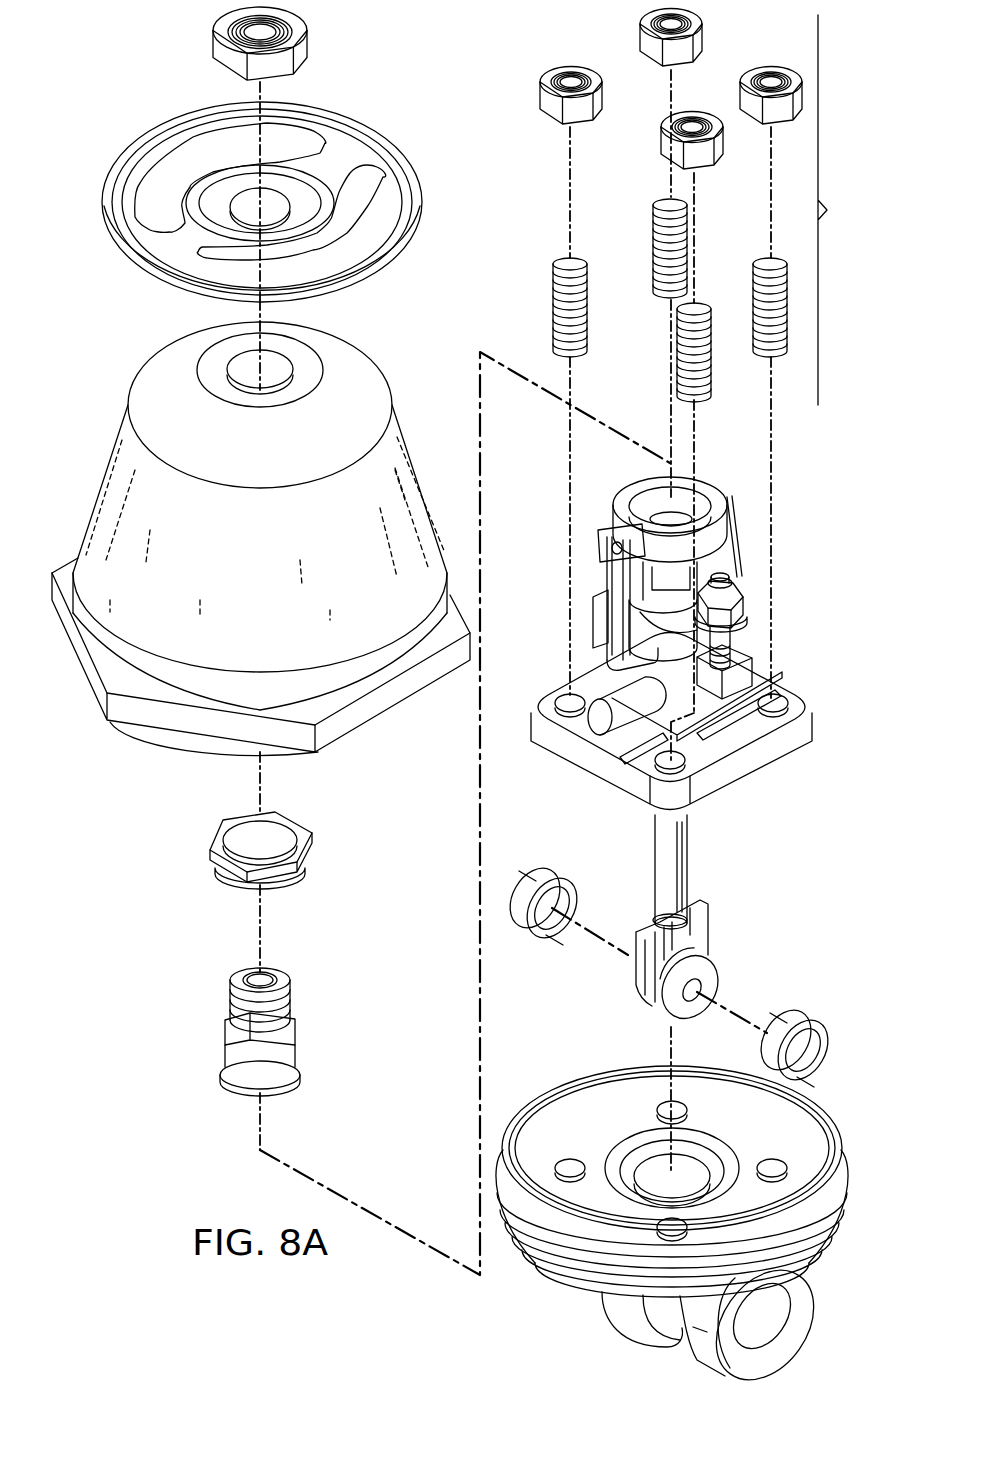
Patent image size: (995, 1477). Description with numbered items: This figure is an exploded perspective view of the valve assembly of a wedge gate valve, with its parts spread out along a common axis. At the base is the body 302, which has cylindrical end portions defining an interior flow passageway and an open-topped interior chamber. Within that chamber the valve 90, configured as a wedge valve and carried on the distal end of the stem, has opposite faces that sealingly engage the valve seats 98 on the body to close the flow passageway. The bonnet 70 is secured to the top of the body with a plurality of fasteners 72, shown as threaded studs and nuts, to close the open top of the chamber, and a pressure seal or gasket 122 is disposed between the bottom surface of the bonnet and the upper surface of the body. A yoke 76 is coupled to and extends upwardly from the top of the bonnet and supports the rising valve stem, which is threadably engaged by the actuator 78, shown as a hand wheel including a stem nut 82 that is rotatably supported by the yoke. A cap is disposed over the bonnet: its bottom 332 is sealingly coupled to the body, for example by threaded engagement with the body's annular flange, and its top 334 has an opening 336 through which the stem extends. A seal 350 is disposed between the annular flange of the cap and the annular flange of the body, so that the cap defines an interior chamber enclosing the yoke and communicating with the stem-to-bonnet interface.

The bonnet 70 is at (753, 775).
The fasteners 72 is at (700, 207).
The yoke 76 is at (710, 482).
The actuator 78 is at (163, 125).
The stem nut 82 is at (226, 1045).
The valve 90 is at (628, 980).
The valve seats 98 is at (540, 870).
The pressure seal or gasket 122 is at (622, 1156).
The body 302 is at (686, 1222).
The bottom 332 is at (127, 727).
The top 334 is at (260, 510).
The opening 336 is at (253, 378).
The seal 350 is at (562, 1093).